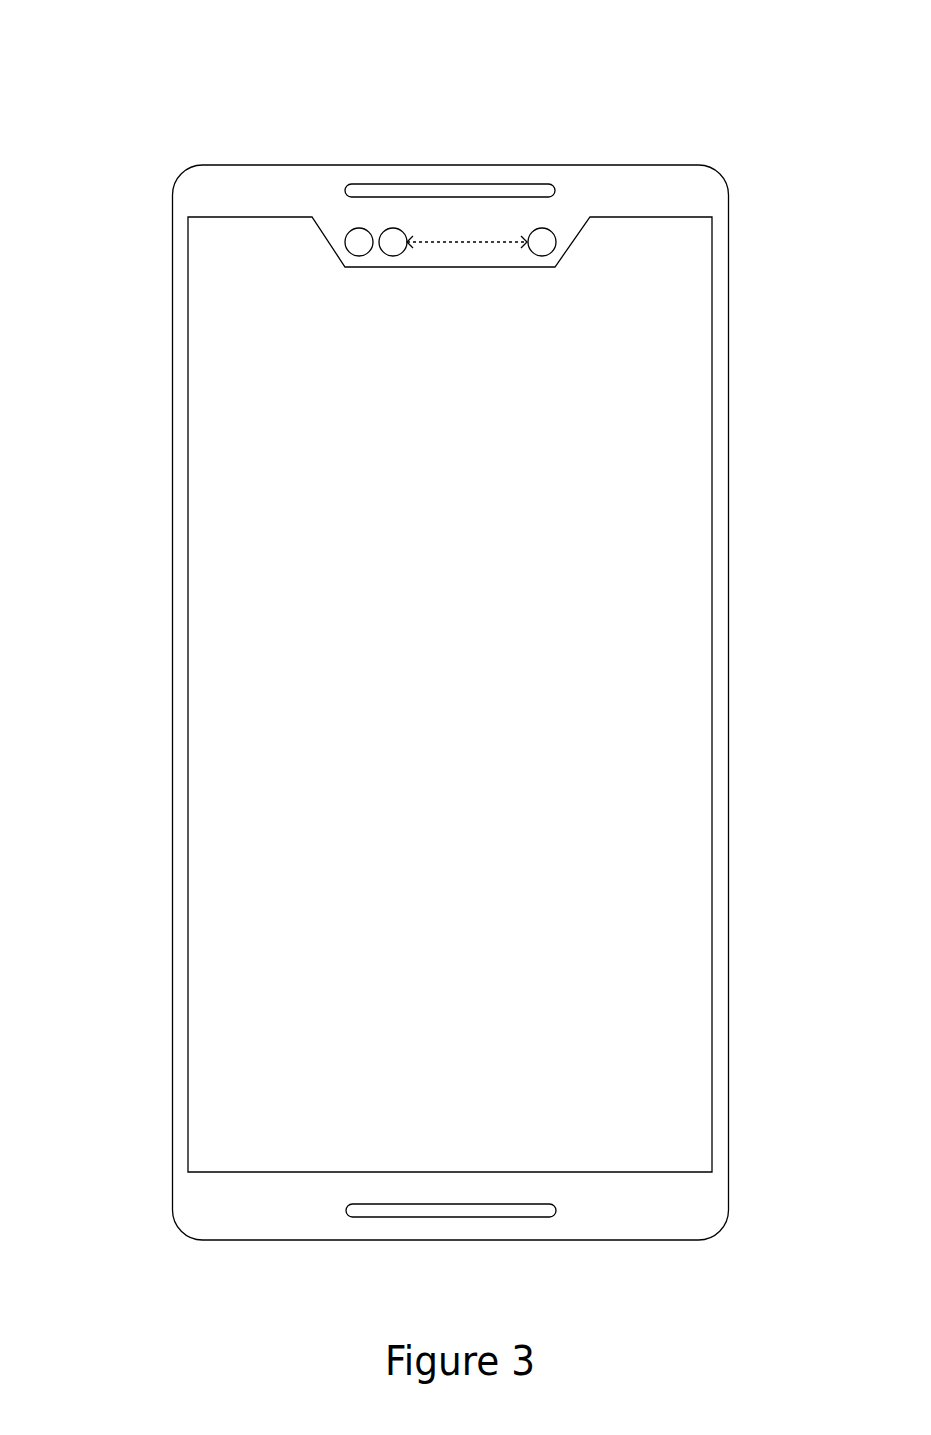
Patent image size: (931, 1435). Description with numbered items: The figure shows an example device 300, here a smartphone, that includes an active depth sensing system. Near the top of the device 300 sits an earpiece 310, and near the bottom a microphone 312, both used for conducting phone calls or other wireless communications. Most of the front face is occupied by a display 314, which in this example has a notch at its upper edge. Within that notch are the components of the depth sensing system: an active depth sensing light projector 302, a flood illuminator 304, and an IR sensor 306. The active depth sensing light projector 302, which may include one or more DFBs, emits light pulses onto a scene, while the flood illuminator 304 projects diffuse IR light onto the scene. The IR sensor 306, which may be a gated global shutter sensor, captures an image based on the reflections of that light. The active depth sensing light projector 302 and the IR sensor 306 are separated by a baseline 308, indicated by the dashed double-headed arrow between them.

The device 300 is at (438, 660).
The active depth sensing light projector 302 is at (542, 256).
The flood illuminator 304 is at (357, 256).
The IR sensor 306 is at (393, 256).
The baseline 308 is at (455, 243).
The earpiece 310 is at (494, 185).
The microphone 312 is at (485, 1217).
The display 314 is at (676, 598).